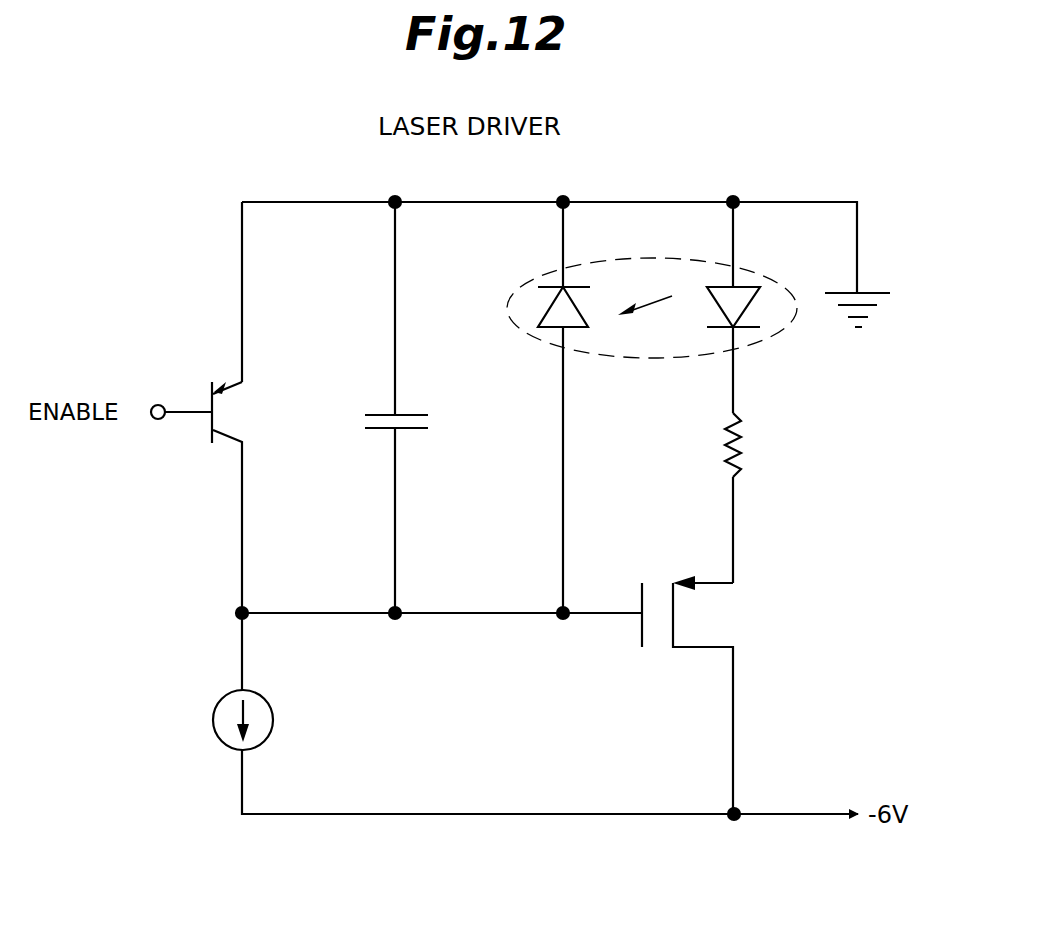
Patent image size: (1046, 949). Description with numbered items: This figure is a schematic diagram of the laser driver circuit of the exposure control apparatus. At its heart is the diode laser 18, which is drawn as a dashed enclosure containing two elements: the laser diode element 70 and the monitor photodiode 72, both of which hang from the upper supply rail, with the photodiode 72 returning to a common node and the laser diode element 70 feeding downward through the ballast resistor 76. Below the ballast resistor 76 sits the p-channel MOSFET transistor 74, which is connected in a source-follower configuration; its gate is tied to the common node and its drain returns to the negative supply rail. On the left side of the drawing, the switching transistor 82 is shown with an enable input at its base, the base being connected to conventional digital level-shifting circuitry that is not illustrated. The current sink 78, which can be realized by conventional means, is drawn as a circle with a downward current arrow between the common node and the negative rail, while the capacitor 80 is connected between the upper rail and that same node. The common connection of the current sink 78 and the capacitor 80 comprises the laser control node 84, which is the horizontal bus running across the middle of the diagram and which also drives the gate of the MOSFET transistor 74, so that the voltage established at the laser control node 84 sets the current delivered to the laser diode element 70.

The diode laser 18 is at (632, 360).
The laser diode element 70 is at (752, 307).
The monitor photodiode 72 is at (550, 332).
The p-channel MOSFET transistor 74 is at (676, 620).
The ballast resistor 76 is at (742, 452).
The current sink 78 is at (216, 731).
The capacitor 80 is at (364, 418).
The switching transistor 82 is at (206, 391).
The laser control node 84 is at (492, 615).